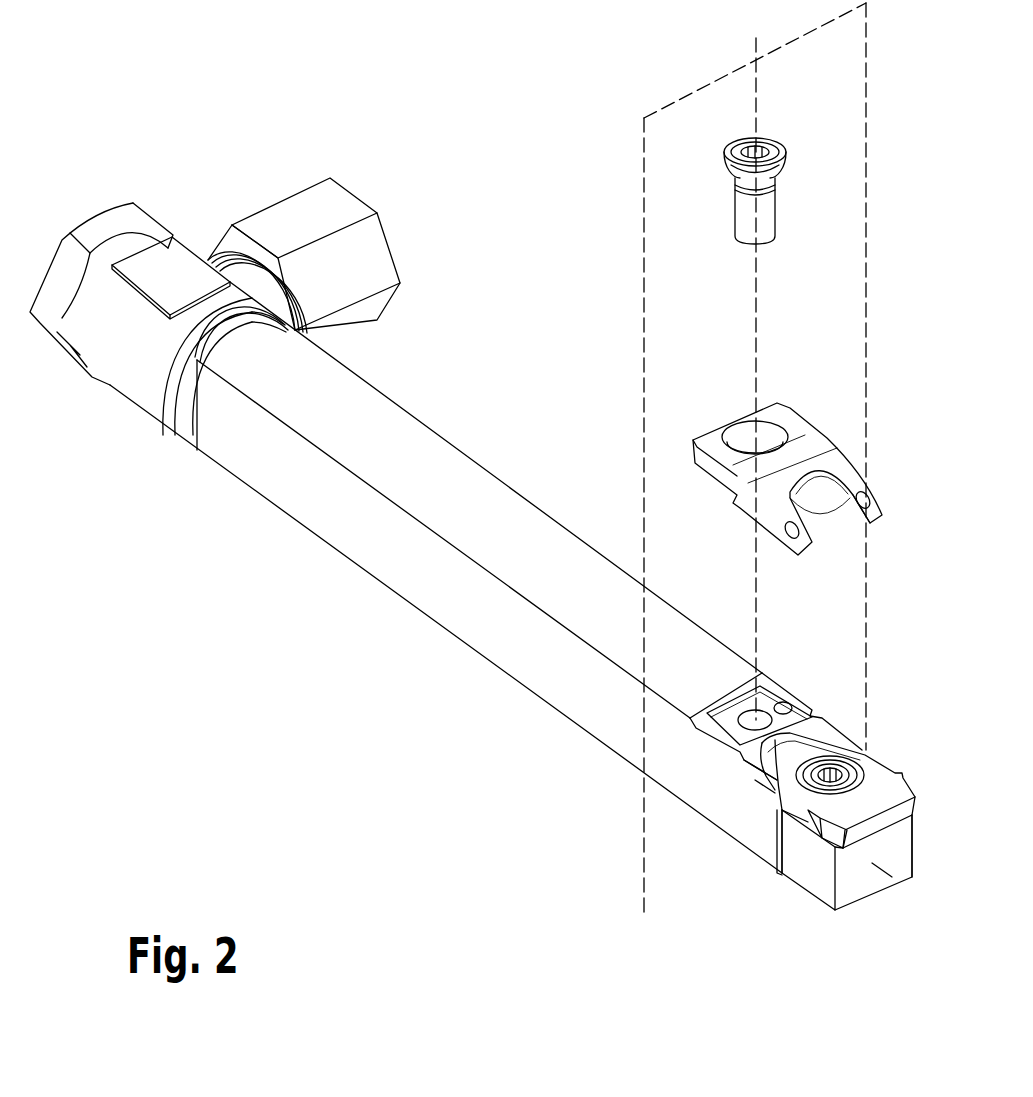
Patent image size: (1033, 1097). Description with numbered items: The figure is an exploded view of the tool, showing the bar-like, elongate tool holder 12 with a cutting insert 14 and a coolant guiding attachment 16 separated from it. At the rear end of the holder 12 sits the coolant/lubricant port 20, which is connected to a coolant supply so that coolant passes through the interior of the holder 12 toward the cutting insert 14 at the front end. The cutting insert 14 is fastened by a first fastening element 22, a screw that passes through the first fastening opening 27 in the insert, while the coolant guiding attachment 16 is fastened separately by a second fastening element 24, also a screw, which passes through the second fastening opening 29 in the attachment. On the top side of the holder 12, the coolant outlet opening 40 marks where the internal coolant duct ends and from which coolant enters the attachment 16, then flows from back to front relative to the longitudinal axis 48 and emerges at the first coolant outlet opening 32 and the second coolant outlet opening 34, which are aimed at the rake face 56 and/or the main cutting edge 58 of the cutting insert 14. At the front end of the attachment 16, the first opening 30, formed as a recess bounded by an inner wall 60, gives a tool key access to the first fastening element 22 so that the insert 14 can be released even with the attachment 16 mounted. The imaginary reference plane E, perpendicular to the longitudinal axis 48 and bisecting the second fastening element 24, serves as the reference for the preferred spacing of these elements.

The tool holder 12 is at (437, 610).
The cutting insert 14 is at (850, 885).
The coolant guiding attachment 16 is at (803, 485).
The coolant/lubricant port 20 is at (378, 256).
The first fastening element 22 is at (823, 767).
The second fastening element 24 is at (766, 212).
The first fastening opening 27 is at (776, 780).
The second fastening opening 29 is at (742, 433).
The first opening 30 is at (843, 528).
The first coolant outlet opening 32 is at (790, 546).
The second coolant outlet opening 34 is at (868, 497).
The coolant outlet opening 40 is at (787, 703).
The longitudinal axis 48 is at (922, 893).
The rake face 56 is at (841, 753).
The main cutting edge 58 is at (887, 815).
The inner wall 60 is at (815, 490).
The reference plane E is at (852, 64).